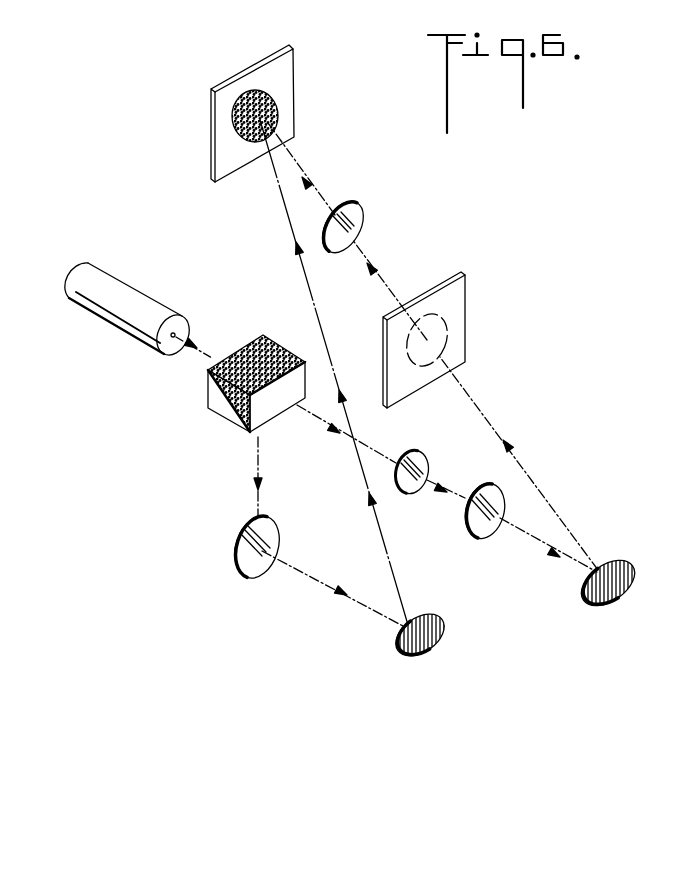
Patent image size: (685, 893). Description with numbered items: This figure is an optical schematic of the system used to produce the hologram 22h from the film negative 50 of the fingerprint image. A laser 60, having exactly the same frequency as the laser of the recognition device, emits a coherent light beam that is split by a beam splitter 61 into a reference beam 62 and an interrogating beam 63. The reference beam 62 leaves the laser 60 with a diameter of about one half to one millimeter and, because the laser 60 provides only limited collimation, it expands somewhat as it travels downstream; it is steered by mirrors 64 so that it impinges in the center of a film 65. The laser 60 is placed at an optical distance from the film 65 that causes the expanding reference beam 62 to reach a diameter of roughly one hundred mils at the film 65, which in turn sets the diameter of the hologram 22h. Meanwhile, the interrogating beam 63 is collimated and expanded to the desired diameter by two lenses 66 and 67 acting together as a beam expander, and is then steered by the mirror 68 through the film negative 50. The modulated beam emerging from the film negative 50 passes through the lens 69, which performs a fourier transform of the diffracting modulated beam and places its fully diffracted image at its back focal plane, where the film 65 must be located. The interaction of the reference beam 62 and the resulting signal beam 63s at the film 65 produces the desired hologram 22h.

The film negative 50 is at (467, 298).
The laser 60 is at (148, 302).
The beam splitter 61 is at (223, 407).
The reference beam 62 is at (306, 278).
The interrogating beam 63 is at (333, 432).
The signal beam 63s is at (393, 293).
The mirrors 64 is at (250, 570).
The film 65 is at (290, 113).
The lens 66 is at (445, 438).
The lens 67 is at (477, 533).
The mirror 68 is at (608, 600).
The lens 69 is at (357, 213).
The hologram 22h is at (267, 112).